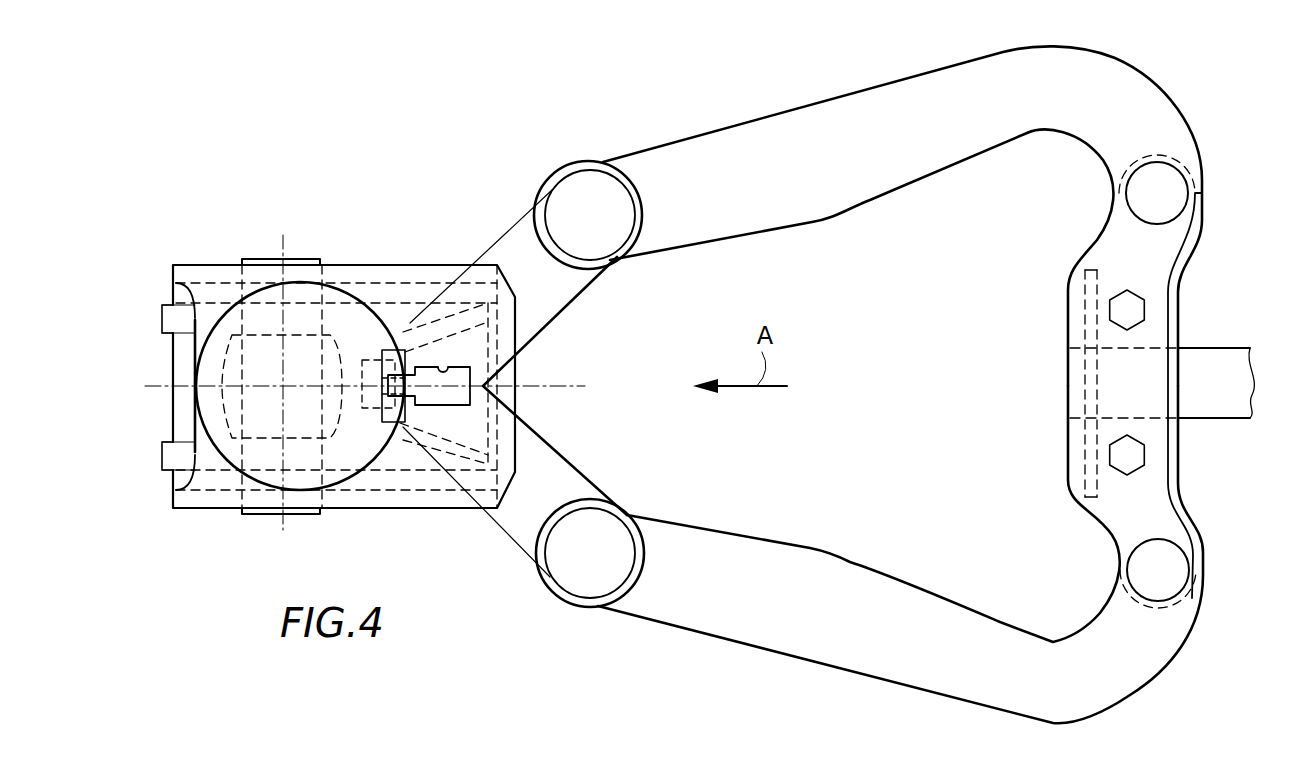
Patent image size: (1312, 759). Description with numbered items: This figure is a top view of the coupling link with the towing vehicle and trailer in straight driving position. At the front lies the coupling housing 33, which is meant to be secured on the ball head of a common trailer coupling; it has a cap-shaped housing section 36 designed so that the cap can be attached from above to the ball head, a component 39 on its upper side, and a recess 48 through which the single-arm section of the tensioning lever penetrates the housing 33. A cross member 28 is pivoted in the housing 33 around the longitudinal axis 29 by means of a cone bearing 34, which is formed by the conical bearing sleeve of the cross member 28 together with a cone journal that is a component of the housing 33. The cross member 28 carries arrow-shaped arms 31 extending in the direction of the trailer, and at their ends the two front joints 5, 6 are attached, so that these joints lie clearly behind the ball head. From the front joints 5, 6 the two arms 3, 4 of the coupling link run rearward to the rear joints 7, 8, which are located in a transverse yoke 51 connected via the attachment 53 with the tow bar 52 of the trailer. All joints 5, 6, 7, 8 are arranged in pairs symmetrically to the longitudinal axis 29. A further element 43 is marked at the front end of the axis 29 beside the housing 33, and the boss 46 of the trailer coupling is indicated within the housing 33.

The upper arm of wishbone 3 is at (872, 172).
The lower arm of wishbone 4 is at (820, 552).
The front joint 5 is at (600, 208).
The front joint 6 is at (563, 567).
The rear joint 7 is at (1170, 203).
The rear joint 8 is at (1172, 568).
The cross member 28 is at (568, 324).
The longitudinal axis 29 is at (584, 398).
The arrow-shaped arms 31 is at (520, 258).
The coupling housing 33 is at (215, 268).
The cone bearing 34 is at (445, 317).
The cap-shaped housing section 36 is at (193, 347).
The clamp plate 39 is at (307, 262).
The ball 43 is at (150, 388).
The boss 46 is at (217, 372).
The recess 48 is at (443, 366).
The transverse yoke 51 is at (1112, 247).
The tow bar 52 is at (1232, 362).
The attachment 53 is at (1135, 306).